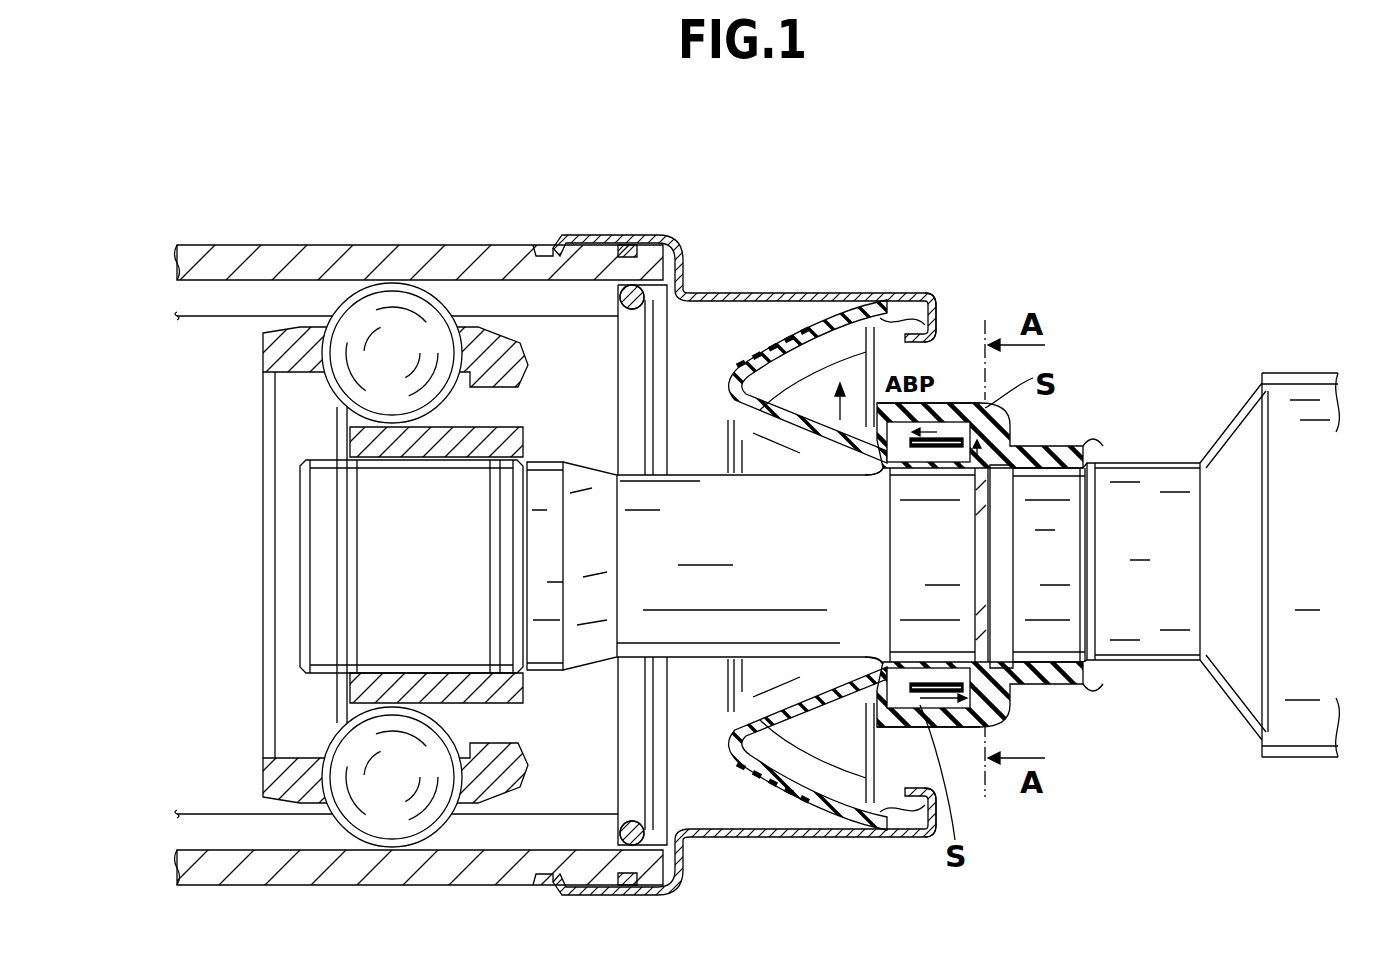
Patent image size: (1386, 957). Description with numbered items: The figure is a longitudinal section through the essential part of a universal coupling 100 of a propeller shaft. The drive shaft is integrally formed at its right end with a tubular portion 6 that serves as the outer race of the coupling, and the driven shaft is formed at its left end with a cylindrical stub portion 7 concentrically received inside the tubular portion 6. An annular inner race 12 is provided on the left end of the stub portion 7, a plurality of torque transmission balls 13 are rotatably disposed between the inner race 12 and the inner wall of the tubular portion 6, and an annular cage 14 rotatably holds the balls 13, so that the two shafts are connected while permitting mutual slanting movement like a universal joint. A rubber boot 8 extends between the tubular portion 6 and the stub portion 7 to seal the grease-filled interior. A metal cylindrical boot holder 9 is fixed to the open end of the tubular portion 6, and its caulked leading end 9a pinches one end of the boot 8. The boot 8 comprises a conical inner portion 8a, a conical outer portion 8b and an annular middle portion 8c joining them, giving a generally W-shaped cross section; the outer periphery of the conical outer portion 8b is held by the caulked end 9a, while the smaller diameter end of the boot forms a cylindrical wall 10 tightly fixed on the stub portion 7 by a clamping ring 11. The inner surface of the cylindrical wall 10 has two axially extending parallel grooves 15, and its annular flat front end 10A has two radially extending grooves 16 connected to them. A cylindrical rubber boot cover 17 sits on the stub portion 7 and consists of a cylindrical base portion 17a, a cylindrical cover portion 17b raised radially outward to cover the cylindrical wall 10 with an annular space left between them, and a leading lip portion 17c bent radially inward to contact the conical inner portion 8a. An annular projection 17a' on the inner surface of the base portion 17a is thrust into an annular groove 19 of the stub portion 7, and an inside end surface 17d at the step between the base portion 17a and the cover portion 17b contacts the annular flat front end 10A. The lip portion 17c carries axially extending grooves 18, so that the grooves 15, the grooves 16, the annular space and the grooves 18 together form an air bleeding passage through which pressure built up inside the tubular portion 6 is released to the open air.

The tubular portion 6 is at (250, 246).
The universal coupling 100 is at (558, 215).
The rubber boot 8 is at (895, 335).
The conical inner portion 8a is at (780, 340).
The conical outer portion 8b is at (773, 345).
The annular middle portion 8c is at (728, 378).
The cylindrical boot holder 9 is at (735, 292).
The caulked leading end 9a is at (946, 300).
The cylindrical wall 10 is at (990, 445).
The annular flat front end 10A is at (1020, 672).
The clamping ring 11 is at (930, 700).
The annular inner race 12 is at (338, 433).
The torque transmission balls 13 is at (352, 375).
The annular cage 14 is at (272, 333).
The parallel grooves (first passage) 15 is at (893, 472).
The radially extending grooves (second passage) 16 is at (990, 452).
The cylindrical rubber boot cover 17 is at (1100, 440).
The cylindrical base portion 17a is at (1205, 562).
The annular projection 17a' is at (1094, 627).
The cylindrical cover portion 17b is at (957, 403).
The leading lip portion 17c is at (884, 470).
The inside end surface 17d is at (1035, 690).
The grooves 18 is at (885, 455).
The annular groove 19 is at (1105, 478).
The cylindrical stub portion 7 is at (1142, 650).